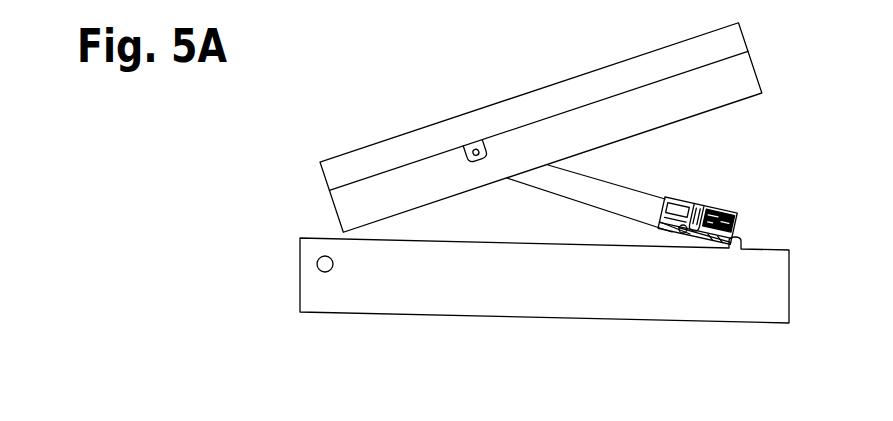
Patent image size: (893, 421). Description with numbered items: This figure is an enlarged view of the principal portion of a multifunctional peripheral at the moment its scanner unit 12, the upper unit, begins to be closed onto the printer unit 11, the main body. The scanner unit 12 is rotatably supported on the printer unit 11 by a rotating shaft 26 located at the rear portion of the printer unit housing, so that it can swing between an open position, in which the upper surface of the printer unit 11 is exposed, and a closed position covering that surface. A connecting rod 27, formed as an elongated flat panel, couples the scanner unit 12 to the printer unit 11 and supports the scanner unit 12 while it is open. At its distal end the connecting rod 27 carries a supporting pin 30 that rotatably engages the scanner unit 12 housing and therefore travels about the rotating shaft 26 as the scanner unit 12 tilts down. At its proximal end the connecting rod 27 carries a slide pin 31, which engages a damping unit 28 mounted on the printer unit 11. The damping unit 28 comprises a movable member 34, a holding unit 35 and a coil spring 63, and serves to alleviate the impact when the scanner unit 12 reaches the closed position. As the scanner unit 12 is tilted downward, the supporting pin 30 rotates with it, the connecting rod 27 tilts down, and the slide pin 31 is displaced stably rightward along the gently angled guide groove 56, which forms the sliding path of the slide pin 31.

The printer unit 11 is at (302, 298).
The scanner unit 12 is at (389, 139).
The rotating shaft 26 is at (317, 262).
The connecting rod 27 is at (540, 189).
The damping unit 28 is at (713, 180).
The supporting pin 30 is at (462, 166).
The slide pin 31 is at (683, 233).
The movable member 34 is at (662, 203).
The holding unit 35 is at (674, 195).
The guide groove 56 is at (677, 228).
The coil spring 63 is at (727, 209).